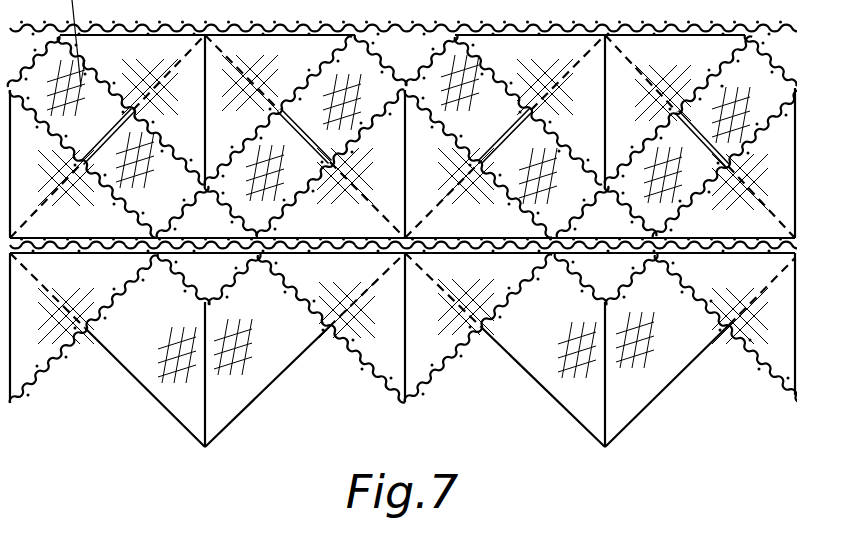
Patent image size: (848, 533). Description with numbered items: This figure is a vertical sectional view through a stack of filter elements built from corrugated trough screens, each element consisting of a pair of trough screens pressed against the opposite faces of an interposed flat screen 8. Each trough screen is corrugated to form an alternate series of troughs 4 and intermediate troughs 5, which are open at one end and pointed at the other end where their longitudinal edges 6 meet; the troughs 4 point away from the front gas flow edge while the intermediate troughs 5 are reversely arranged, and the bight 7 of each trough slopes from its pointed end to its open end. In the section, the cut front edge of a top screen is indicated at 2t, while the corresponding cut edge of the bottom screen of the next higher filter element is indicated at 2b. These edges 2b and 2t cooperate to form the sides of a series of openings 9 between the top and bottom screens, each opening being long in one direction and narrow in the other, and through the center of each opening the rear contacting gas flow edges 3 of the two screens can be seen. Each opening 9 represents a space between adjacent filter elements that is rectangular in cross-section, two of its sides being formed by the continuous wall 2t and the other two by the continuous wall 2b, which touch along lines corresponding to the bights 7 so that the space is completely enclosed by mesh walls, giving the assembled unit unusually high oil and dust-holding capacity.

The cut edge of bottom screen 2b is at (397, 109).
The cut edge of top screen 2t is at (55, 136).
The rear gas flow edge 3 is at (112, 126).
The trough 4 is at (402, 245).
The intermediate trough 5 is at (402, 159).
The longitudinal edge 6 is at (174, 257).
The bight 7 is at (407, 153).
The flat screen 8 is at (162, 27).
The opening 9 is at (722, 83).